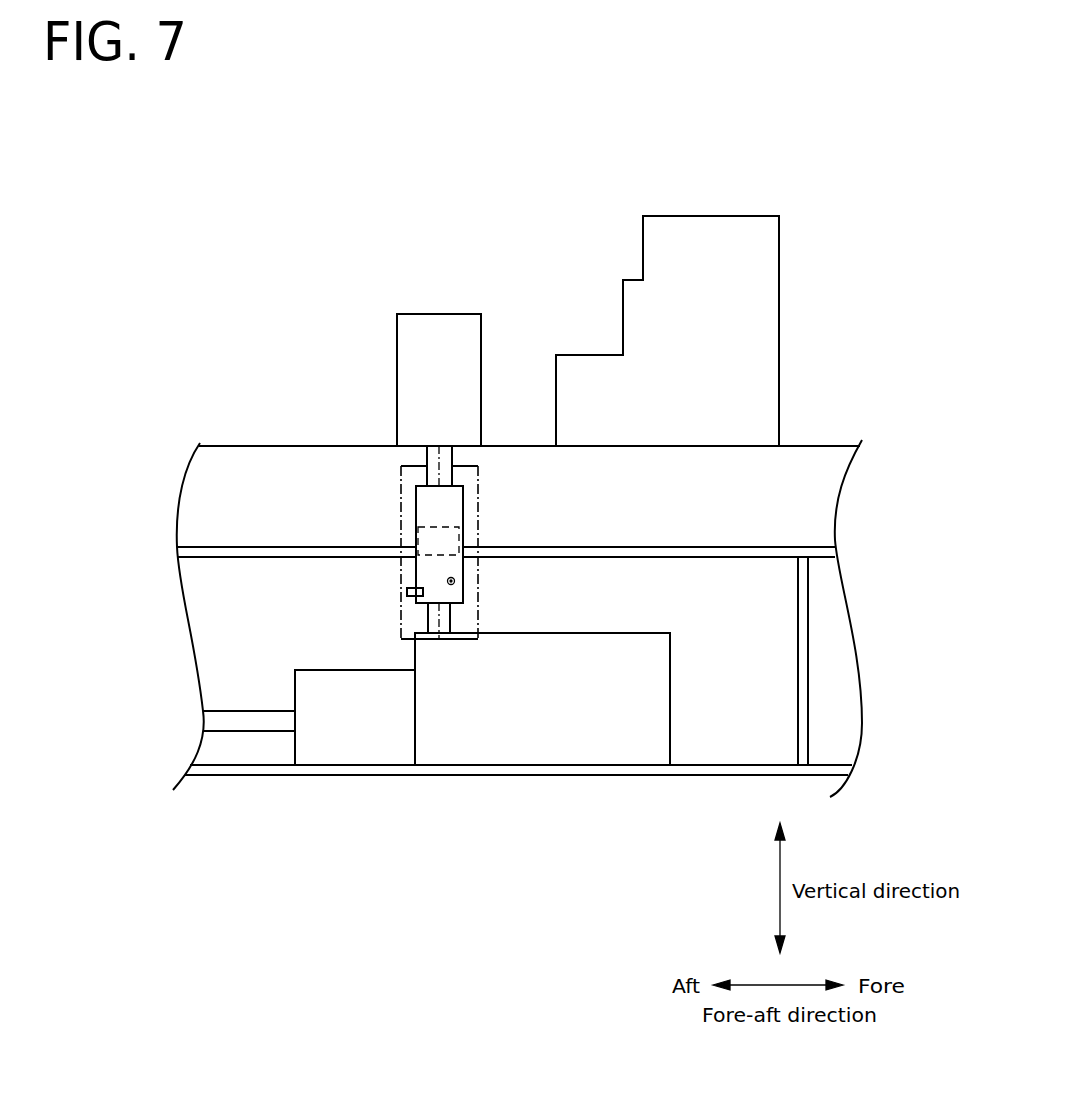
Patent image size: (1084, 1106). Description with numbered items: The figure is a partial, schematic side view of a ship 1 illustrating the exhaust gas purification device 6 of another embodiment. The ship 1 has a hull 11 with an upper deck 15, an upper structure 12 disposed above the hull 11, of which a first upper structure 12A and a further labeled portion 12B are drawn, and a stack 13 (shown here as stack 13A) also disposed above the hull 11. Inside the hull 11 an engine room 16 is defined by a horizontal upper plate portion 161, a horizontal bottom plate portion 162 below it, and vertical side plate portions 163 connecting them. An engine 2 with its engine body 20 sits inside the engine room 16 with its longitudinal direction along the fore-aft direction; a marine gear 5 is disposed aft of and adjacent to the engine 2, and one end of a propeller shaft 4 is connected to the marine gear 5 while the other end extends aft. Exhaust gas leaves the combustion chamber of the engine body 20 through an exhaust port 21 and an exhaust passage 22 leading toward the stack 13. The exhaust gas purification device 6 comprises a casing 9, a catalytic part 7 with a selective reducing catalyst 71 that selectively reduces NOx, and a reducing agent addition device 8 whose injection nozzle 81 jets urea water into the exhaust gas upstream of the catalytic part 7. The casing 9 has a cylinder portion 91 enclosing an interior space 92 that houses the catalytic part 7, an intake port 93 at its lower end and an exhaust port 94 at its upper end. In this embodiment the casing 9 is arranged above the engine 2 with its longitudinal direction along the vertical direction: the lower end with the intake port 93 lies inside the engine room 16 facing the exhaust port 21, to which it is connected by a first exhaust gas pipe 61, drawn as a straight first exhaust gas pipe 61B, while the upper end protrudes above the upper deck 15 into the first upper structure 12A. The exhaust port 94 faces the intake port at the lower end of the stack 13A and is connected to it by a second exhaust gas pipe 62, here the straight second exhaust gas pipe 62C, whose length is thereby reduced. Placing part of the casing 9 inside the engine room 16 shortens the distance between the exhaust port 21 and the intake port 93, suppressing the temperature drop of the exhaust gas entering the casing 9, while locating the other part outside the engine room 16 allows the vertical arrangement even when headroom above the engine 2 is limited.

The ship 1 is at (217, 148).
The stack 13 is at (434, 342).
The stack 13A is at (407, 313).
The upper structure 12 is at (564, 331).
The first upper structure 12A is at (792, 447).
The stepped frame portion 12B is at (779, 318).
The exhaust gas purification device 6 is at (401, 481).
The second exhaust gas pipe 62 is at (397, 478).
The second exhaust gas pipe 62C is at (427, 458).
The exhaust port 94 is at (440, 484).
The casing 9 is at (466, 496).
The cylinder portion 91 is at (416, 510).
The catalytic part 7 is at (278, 529).
The selective reducing catalyst 71 is at (418, 530).
The reducing agent addition device 8 is at (260, 581).
The injection nozzle 81 is at (410, 587).
The intake port 93 is at (437, 603).
The interior space 92 is at (455, 581).
The first exhaust gas pipe 61 is at (515, 612).
The first exhaust gas pipe 61B is at (450, 625).
The upper deck 15 is at (823, 545).
The engine room 16 is at (755, 676).
The upper plate portion 161 is at (777, 560).
The side plate portions 163 is at (787, 655).
The bottom plate portion 162 is at (777, 763).
The propeller shaft 4 is at (235, 733).
The marine gear 5 is at (355, 765).
The engine body 20 is at (557, 767).
The exhaust port 21 is at (438, 640).
The exhaust passage 22 is at (478, 628).
The engine 2 is at (638, 765).
The hull 11 is at (687, 777).